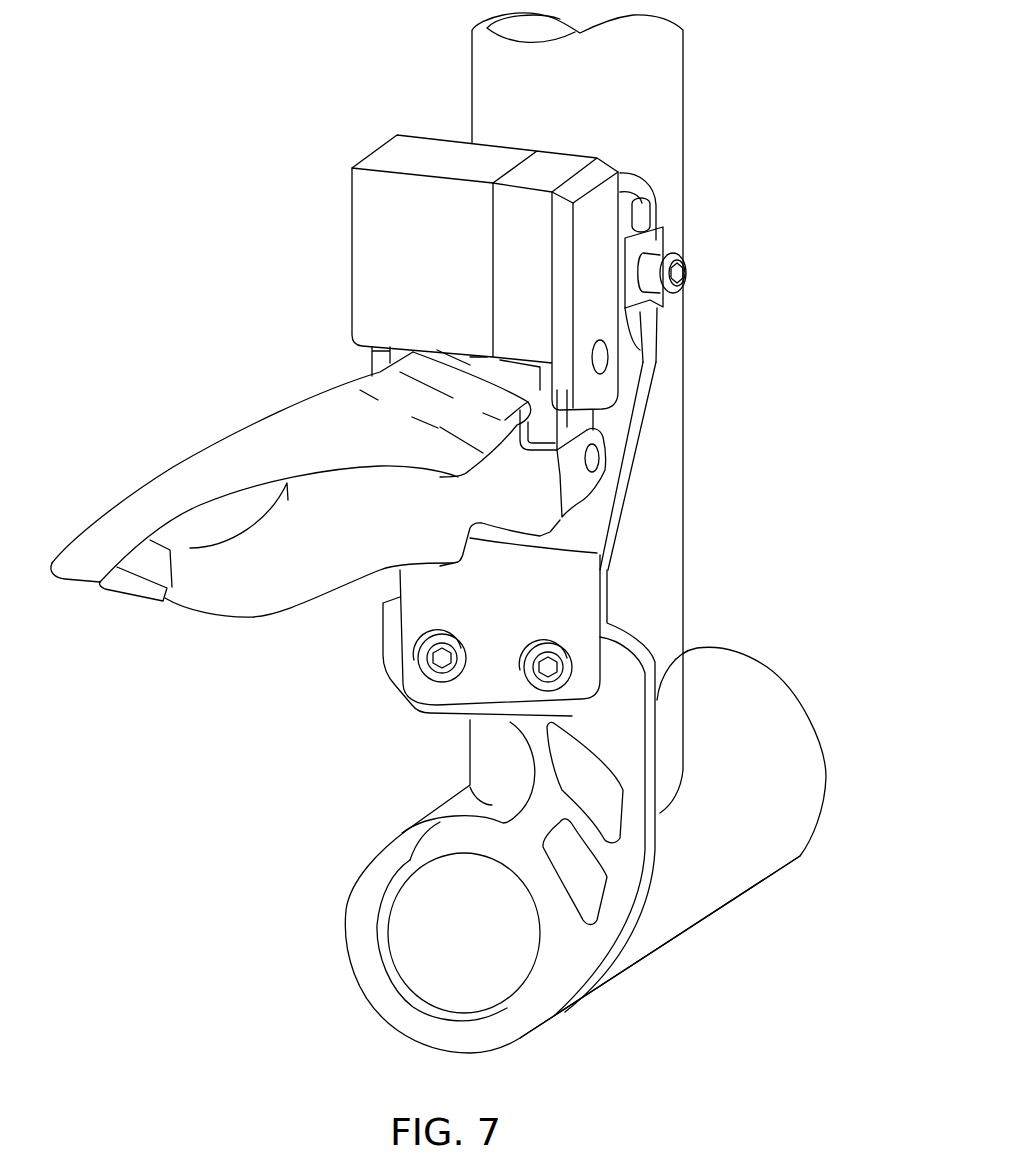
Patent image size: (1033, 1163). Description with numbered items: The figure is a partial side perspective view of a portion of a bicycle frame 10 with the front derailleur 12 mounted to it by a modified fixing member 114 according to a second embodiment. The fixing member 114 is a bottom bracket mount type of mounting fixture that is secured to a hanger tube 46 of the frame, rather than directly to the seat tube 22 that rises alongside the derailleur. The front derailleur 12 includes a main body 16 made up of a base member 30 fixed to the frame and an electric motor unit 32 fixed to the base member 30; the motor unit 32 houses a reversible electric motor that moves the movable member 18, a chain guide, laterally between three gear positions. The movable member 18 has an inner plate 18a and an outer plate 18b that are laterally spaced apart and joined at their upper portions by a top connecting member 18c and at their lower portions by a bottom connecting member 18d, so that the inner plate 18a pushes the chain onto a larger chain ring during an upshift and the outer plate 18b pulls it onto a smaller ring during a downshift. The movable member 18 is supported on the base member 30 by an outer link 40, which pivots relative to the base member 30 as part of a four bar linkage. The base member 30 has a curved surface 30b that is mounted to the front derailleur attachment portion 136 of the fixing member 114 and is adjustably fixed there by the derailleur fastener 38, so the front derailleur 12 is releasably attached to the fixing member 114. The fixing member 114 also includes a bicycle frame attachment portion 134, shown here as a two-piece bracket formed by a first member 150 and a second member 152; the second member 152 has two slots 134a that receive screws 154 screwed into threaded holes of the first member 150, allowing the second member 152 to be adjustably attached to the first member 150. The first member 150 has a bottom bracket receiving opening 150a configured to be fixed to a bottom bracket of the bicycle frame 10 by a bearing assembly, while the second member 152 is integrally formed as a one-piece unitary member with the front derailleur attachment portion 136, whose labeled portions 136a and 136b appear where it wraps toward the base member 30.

The bicycle frame 10 is at (464, 73).
The front derailleur 12 is at (346, 131).
The main body 16 is at (283, 288).
The movable member 18 is at (174, 452).
The inner plate 18a is at (323, 565).
The outer plate 18b is at (233, 473).
The top connecting member 18c is at (505, 412).
The bottom connecting member 18d is at (128, 578).
The seat tube 22 is at (685, 96).
The base member 30 is at (360, 362).
The curved surface 30b is at (643, 313).
The electric motor unit 32 is at (345, 300).
The derailleur fastener 38 is at (682, 283).
The outer link 40 is at (600, 415).
The hanger tube 46 is at (697, 920).
The fixing member 114 is at (660, 465).
The bicycle frame attachment portion 134 is at (738, 577).
The slots 134a is at (543, 645).
The front derailleur attachment portion 136 is at (665, 221).
The clamp band first portion 136a is at (652, 254).
The clamp band second portion 136b is at (636, 206).
The first member 150 is at (688, 685).
The bottom bracket receiving opening 150a is at (385, 937).
The second member 152 is at (607, 582).
The screws 154 is at (535, 683).